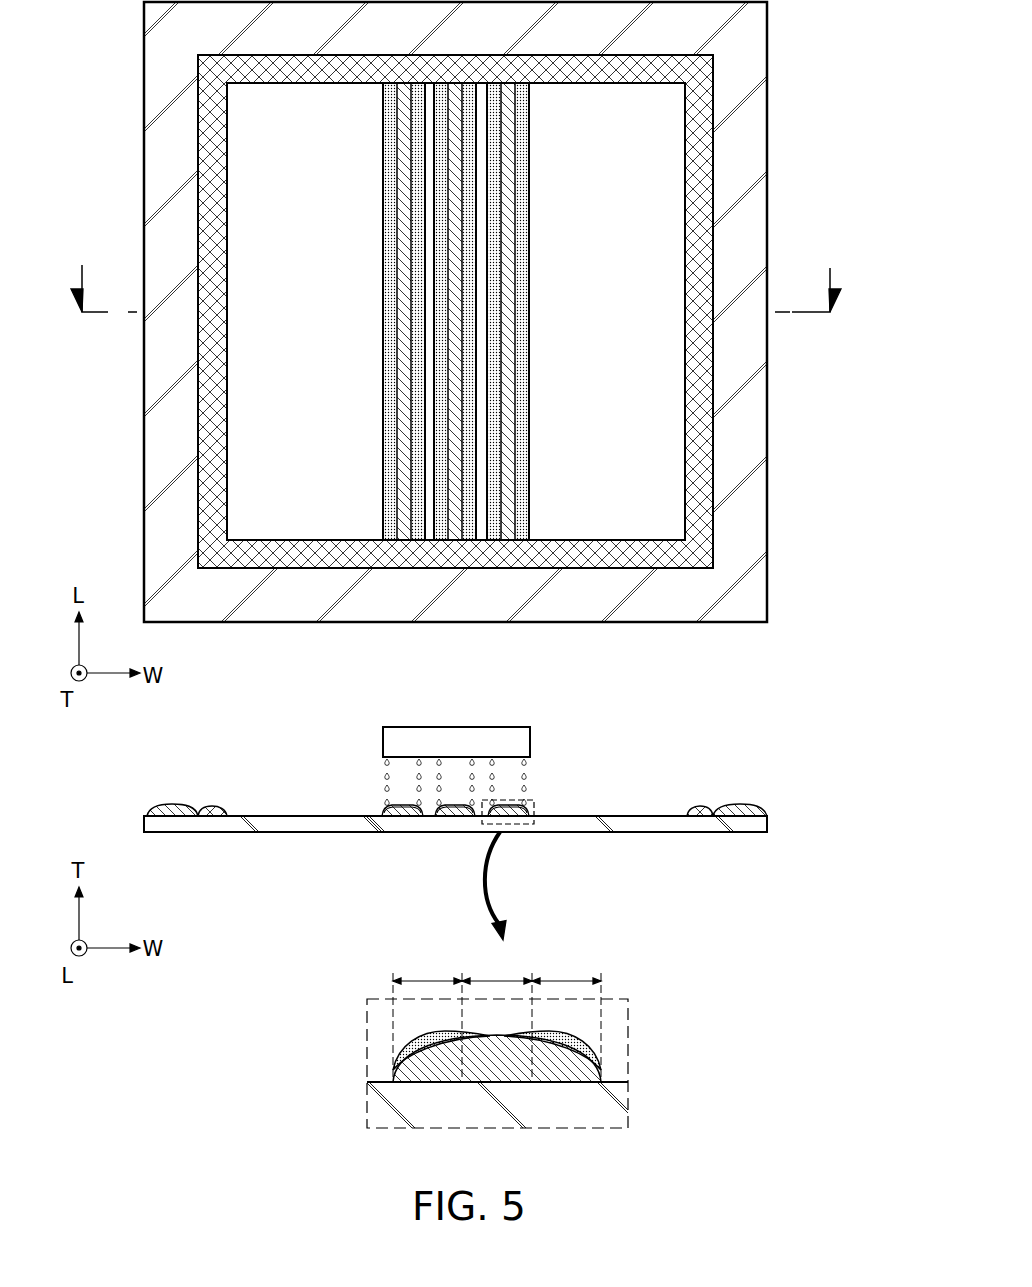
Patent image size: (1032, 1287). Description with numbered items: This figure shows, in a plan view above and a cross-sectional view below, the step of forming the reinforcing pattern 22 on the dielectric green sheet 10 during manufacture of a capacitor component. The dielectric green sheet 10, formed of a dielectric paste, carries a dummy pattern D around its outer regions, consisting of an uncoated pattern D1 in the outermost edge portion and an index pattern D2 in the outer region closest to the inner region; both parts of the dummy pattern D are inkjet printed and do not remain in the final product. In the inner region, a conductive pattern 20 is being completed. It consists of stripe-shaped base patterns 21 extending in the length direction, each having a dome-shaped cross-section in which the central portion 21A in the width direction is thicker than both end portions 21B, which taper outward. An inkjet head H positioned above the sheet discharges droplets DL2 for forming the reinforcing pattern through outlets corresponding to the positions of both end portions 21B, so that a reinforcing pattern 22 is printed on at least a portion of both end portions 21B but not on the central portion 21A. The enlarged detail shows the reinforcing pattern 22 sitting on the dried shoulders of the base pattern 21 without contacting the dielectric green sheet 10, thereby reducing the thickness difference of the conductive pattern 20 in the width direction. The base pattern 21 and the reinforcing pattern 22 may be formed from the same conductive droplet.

The dielectric green sheet 10 is at (777, 157).
The conductive pattern 20 is at (562, 582).
The base pattern 21 is at (402, 814).
The central portion 21A is at (497, 1019).
The both end portions 21B is at (497, 1019).
The reinforcing pattern 22 is at (383, 806).
The dummy pattern D is at (833, 218).
The uncoated pattern D1 is at (755, 193).
The index pattern D2 is at (703, 254).
The droplet for forming a reinforcing pattern DL2 is at (524, 776).
The inkjet head H is at (462, 742).